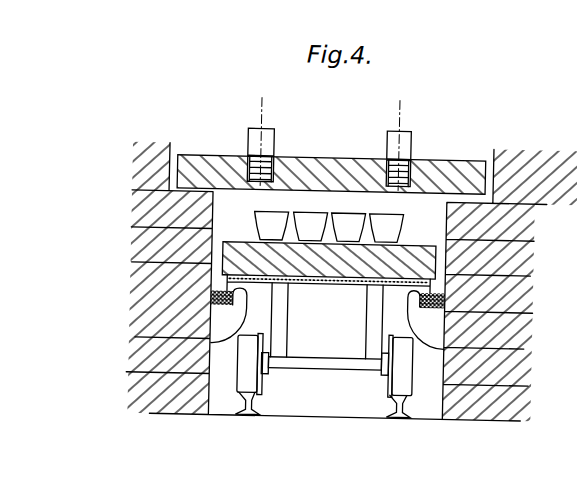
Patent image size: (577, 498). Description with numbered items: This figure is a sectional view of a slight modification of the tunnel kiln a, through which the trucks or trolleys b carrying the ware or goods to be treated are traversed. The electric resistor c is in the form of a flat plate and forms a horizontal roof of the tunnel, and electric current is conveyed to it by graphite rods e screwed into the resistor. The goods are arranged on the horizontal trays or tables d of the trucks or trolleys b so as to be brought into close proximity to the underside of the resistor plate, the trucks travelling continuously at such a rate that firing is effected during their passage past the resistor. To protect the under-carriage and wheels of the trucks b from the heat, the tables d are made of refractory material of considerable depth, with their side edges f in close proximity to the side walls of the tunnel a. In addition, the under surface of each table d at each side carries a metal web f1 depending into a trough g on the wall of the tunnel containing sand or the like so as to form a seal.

The tunnel kiln a is at (315, 199).
The trucks or trolleys b is at (325, 330).
The electric resistor c is at (217, 166).
The trays or tables d is at (416, 246).
The graphite rods e is at (388, 134).
The side edges f is at (226, 248).
The metal web f1 is at (539, 282).
The trough g is at (215, 340).